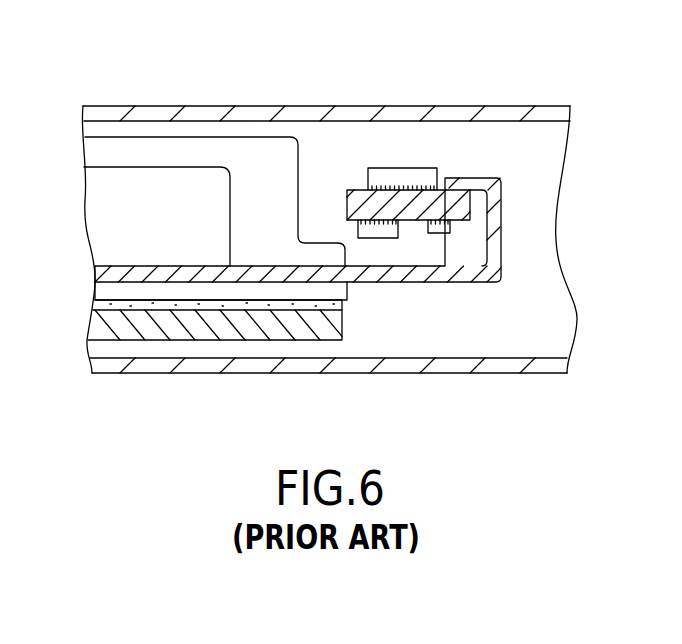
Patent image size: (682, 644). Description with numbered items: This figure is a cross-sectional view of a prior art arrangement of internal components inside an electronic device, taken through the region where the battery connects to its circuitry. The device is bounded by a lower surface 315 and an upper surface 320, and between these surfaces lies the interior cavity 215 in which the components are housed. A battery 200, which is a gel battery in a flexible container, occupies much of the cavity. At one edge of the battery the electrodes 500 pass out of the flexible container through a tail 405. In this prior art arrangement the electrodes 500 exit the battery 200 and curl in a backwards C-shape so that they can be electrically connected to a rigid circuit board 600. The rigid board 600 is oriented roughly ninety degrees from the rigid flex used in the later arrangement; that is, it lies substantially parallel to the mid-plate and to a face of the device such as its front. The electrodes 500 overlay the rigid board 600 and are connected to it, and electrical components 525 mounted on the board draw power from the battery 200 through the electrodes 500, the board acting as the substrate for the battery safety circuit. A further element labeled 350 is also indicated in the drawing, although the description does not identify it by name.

The lower surface 315 is at (207, 115).
The upper surface 320 is at (167, 373).
The battery 200 is at (282, 171).
The electrodes 500 is at (501, 238).
The rigid circuit board 600 is at (354, 189).
The electrical components 525 is at (409, 170).
The tail 405 is at (347, 247).
The adhesive layer 350 is at (106, 306).
The interior cavity 215 is at (344, 323).